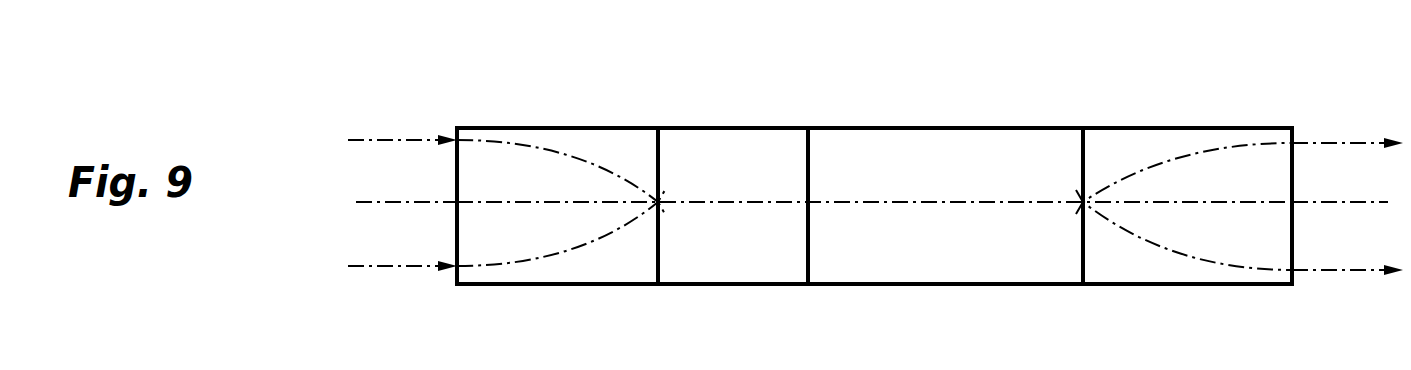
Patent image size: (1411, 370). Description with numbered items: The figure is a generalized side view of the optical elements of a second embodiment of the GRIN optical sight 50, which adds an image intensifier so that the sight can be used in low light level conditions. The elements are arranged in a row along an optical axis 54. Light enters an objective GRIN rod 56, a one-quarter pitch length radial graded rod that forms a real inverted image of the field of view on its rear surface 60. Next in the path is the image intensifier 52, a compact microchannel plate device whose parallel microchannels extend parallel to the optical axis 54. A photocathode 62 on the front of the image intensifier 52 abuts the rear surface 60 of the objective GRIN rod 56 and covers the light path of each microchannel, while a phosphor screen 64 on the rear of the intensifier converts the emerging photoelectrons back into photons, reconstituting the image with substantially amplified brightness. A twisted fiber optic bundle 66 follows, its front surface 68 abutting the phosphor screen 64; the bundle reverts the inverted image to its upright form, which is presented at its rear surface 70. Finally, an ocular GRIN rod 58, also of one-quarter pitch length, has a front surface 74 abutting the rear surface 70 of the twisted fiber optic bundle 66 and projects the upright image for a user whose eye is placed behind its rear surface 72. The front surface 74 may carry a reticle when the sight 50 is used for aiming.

The optical sight 50 is at (1030, 109).
The image intensifier 52 is at (682, 128).
The optical axis 54 is at (368, 202).
The objective GRIN rod 56 is at (527, 128).
The ocular GRIN rod 58 is at (1205, 128).
The rear surface of objective GRIN rod 60 is at (659, 232).
The photocathode 62 is at (656, 255).
The phosphor screen 64 is at (809, 245).
The twisted fiber optic bundle 66 is at (890, 128).
The front surface of twisted fiber optic bundle 68 is at (807, 223).
The rear surface of twisted fiber optic bundle 70 is at (1084, 246).
The rear surface of ocular GRIN rod 72 is at (1292, 235).
The front surface of ocular GRIN rod 74 is at (1082, 228).